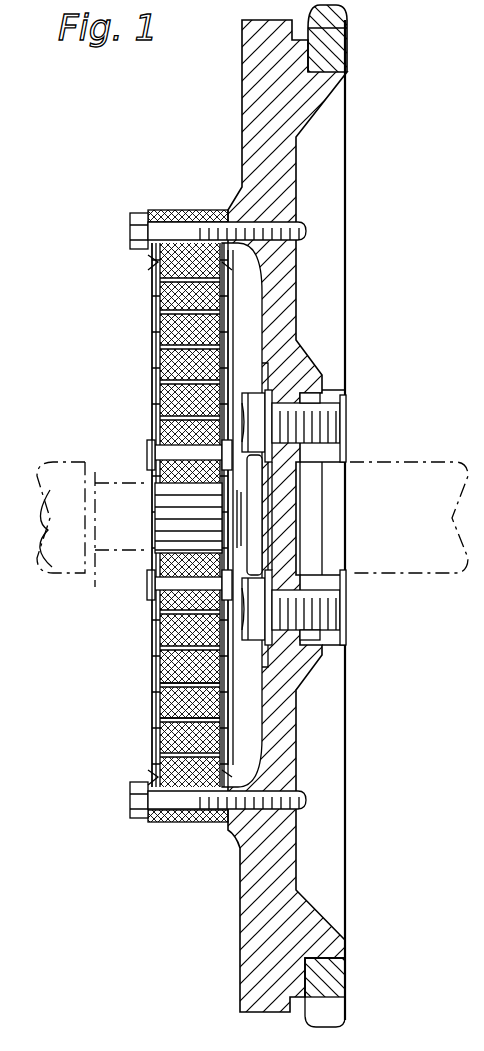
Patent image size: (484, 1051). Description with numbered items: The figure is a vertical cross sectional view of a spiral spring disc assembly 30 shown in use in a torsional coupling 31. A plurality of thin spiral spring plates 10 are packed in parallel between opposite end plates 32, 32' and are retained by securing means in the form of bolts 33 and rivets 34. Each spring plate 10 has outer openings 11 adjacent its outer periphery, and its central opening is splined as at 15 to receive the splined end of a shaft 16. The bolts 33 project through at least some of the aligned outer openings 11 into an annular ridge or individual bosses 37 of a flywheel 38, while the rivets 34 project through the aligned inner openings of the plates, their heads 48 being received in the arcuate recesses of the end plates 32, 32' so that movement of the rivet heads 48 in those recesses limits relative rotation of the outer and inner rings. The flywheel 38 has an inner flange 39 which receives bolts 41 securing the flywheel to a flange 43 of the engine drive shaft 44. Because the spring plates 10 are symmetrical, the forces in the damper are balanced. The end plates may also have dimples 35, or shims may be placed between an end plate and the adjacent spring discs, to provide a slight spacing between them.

The spiral spring plate 10 is at (160, 290).
The outer openings 11 is at (183, 212).
The spline 15 is at (165, 505).
The shaft 16 is at (97, 585).
The assembly 30 is at (152, 709).
The torsional coupling 31 is at (348, 136).
The end plate 32 is at (147, 515).
The end plate 32' is at (279, 705).
The bolts 33 is at (163, 232).
The rivets 34 is at (162, 450).
The dimples 35 is at (155, 262).
The annular ridge or bosses 37 is at (231, 210).
The flywheel 38 is at (280, 270).
The inner flange 39 is at (293, 465).
The bolts 41 is at (300, 368).
The flange 43 is at (352, 380).
The engine drive shaft 44 is at (405, 472).
The rivet heads 48 is at (160, 462).